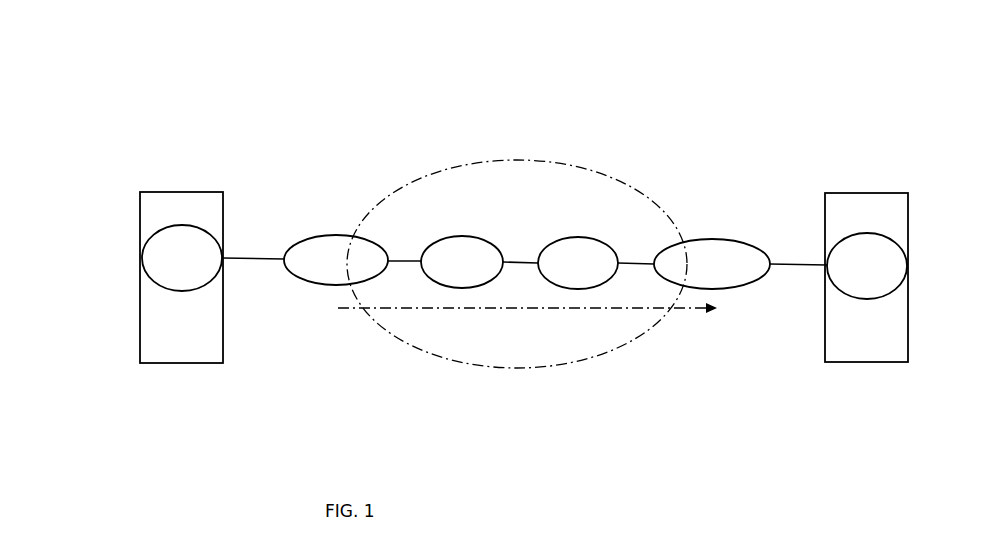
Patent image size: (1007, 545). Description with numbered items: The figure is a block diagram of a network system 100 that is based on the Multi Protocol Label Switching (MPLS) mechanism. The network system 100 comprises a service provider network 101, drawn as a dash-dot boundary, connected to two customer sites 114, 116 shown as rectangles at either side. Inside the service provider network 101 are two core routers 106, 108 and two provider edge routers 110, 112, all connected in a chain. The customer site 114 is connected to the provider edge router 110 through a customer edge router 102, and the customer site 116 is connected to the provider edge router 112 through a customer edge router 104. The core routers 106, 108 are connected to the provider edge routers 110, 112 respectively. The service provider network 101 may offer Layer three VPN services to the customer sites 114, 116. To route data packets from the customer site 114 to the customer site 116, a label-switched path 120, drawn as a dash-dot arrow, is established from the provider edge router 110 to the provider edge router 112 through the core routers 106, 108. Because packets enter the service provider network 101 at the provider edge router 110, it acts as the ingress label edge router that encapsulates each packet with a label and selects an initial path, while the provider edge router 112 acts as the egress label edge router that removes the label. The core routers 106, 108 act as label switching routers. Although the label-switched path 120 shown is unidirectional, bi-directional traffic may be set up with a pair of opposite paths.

The network system 100 is at (544, 513).
The service provider network 101 is at (487, 162).
The customer edge router 102 is at (182, 258).
The customer edge router 104 is at (867, 266).
The core router 106 is at (462, 262).
The core router 108 is at (578, 263).
The provider edge router 110 is at (336, 260).
The provider edge router 112 is at (712, 264).
The customer site 114 is at (181, 277).
The customer site 116 is at (866, 277).
The label-switched path 120 is at (487, 317).